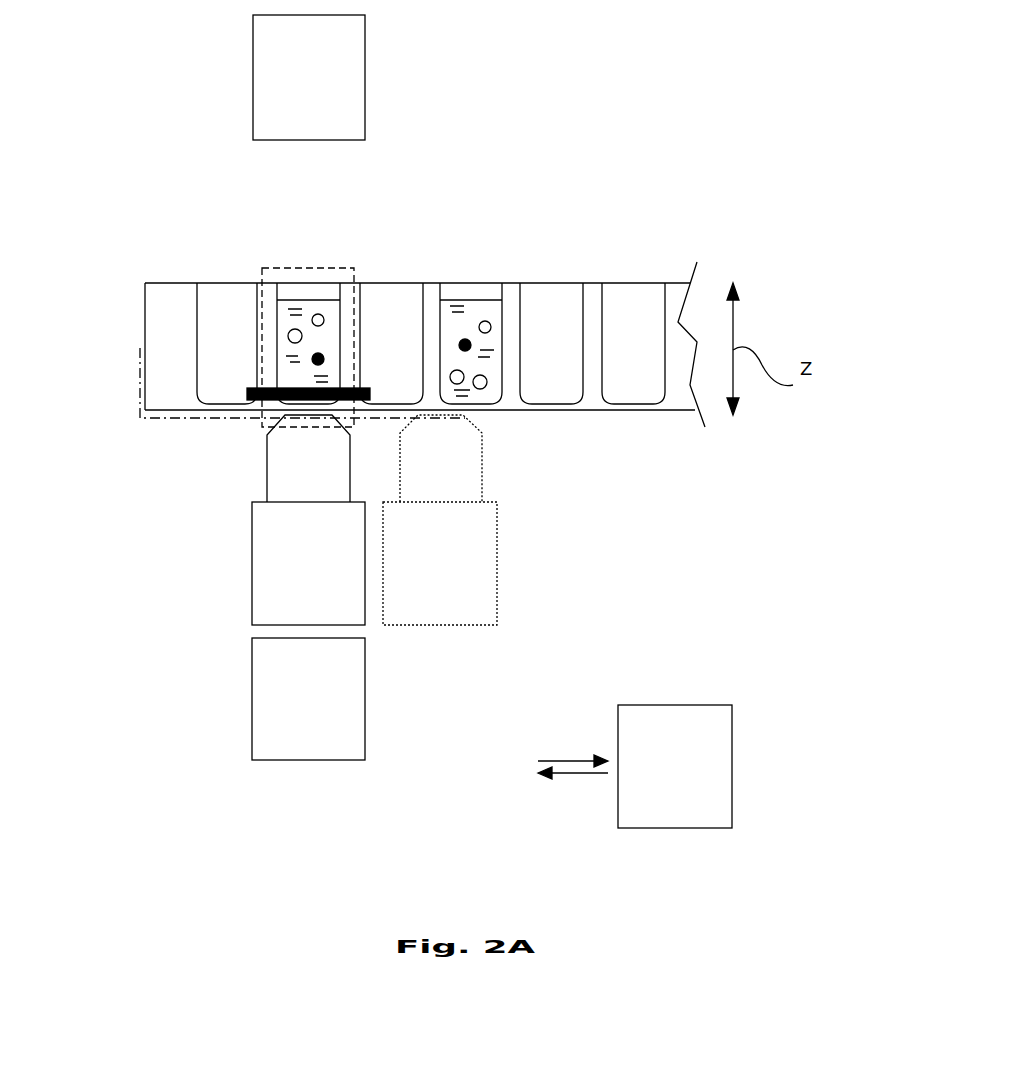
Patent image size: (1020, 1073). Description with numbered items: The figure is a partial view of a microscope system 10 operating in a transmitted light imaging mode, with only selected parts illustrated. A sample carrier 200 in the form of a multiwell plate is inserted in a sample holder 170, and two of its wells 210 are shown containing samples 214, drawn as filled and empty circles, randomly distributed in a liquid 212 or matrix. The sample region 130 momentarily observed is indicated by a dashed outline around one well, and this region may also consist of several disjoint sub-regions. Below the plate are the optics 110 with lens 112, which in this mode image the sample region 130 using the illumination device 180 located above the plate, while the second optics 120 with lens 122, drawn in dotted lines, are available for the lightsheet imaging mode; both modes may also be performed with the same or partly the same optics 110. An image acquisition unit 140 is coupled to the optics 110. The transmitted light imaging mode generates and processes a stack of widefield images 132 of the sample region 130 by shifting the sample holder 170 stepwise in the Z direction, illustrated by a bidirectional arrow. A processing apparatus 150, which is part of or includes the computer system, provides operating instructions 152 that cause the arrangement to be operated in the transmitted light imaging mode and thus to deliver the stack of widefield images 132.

The microscope system 10 is at (101, 562).
The optics 110 is at (236, 596).
The lens 112 is at (288, 453).
The optics 120 is at (512, 596).
The lens 122 is at (460, 453).
The sample region 130 is at (300, 267).
The stack of widefield images 132 is at (257, 390).
The image acquisition unit 140 is at (308, 699).
The processing apparatus 150 is at (675, 766).
The operating instructions 152 is at (578, 775).
The sample holder 170 is at (172, 418).
The illumination device 180 is at (309, 77).
The sample carrier 200 is at (610, 410).
The wells 210 is at (547, 292).
The liquid 212 is at (290, 300).
The samples 214 is at (318, 313).